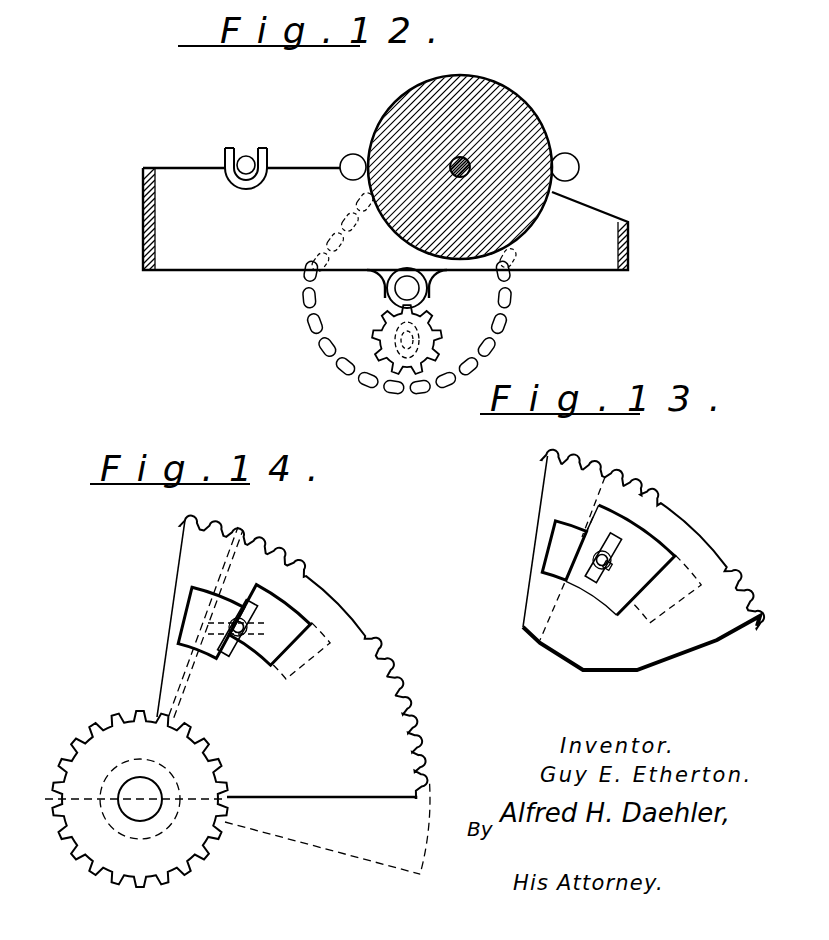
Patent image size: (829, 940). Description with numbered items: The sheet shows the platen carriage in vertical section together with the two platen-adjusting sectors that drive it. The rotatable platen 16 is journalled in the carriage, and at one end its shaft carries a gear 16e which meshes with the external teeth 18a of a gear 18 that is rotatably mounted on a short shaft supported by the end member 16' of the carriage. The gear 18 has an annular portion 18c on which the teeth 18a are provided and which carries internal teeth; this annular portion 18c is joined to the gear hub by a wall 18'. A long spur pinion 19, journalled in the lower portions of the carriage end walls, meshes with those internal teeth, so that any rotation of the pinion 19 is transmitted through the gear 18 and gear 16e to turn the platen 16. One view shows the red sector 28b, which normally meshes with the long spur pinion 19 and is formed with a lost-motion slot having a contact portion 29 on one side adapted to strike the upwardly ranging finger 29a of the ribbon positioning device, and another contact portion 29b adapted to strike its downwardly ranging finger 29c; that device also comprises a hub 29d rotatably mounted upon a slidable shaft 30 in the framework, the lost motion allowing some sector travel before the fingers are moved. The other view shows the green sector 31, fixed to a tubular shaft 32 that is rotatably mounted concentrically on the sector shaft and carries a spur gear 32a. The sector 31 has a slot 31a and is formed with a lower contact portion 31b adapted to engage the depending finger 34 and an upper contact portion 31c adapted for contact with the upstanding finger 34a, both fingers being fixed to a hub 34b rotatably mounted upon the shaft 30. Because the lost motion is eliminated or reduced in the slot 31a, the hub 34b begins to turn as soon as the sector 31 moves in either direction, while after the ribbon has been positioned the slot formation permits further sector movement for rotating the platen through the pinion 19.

In FIG. 12, the platen 16 is at (385, 182).
In FIG. 12, the end member of the carriage 16' is at (607, 262).
In FIG. 12, the gear 16e is at (516, 100).
In FIG. 12, the gear 18 is at (391, 292).
In FIG. 12, the wall 18' is at (343, 365).
In FIG. 12, the external teeth 18a is at (503, 304).
In FIG. 12, the annular portion 18c is at (490, 342).
In FIG. 12, the long spur pinion 19 is at (393, 360).
In FIG. 13, the sector 28b is at (667, 522).
In FIG. 13, the contact portion 29 is at (592, 528).
In FIG. 13, the upwardly ranging finger 29a is at (622, 536).
In FIG. 13, the contact portion 29b is at (603, 588).
In FIG. 13, the downwardly ranging finger 29c is at (585, 580).
In FIG. 13, the hub 29d is at (612, 566).
In FIG. 13, the slidable shaft 30 is at (611, 559).
In FIG. 14, the slidable shaft 30 is at (230, 622).
In FIG. 14, the sector 31 is at (343, 643).
In FIG. 14, the slot 31a is at (187, 633).
In FIG. 14, the lower contact portion 31b is at (238, 652).
In FIG. 14, the upper contact portion 31c is at (243, 602).
In FIG. 14, the tubular shaft 32 is at (121, 799).
In FIG. 14, the spur gear 32a is at (83, 730).
In FIG. 14, the depending finger 34 is at (232, 648).
In FIG. 14, the upstanding finger 34a is at (256, 600).
In FIG. 14, the hub 34b is at (254, 630).